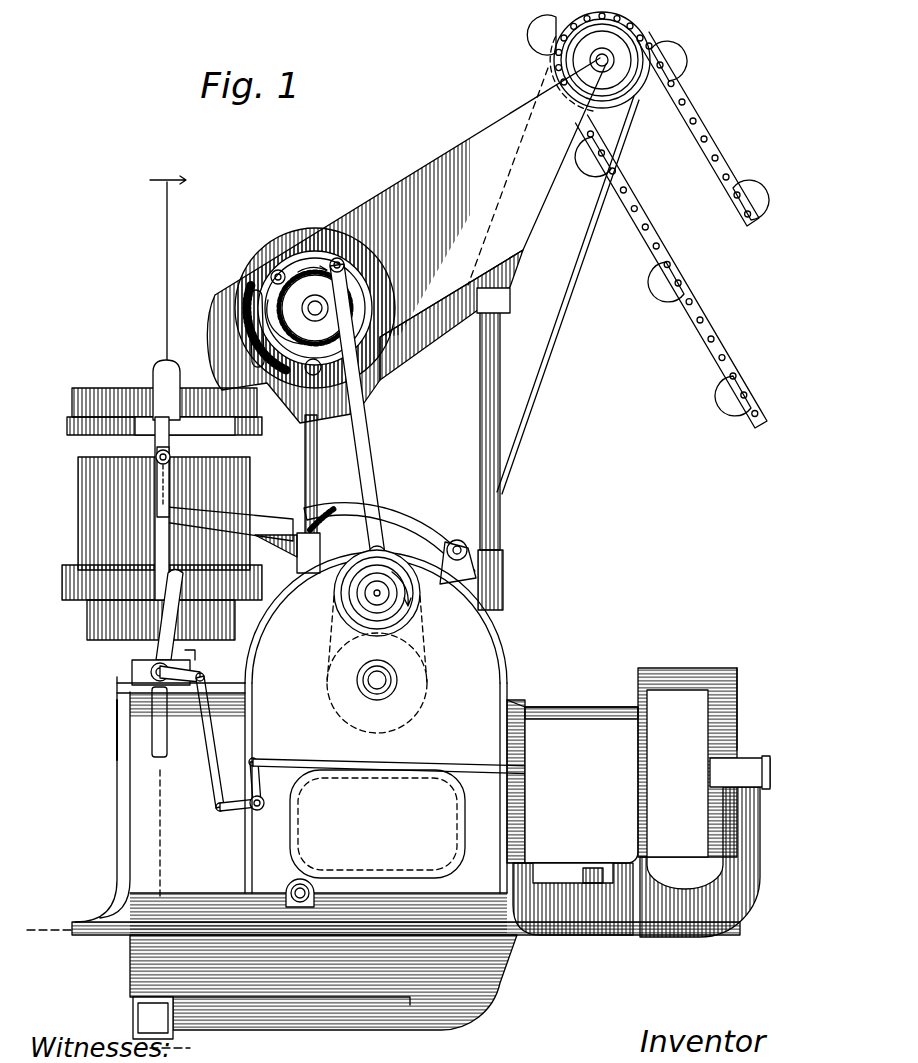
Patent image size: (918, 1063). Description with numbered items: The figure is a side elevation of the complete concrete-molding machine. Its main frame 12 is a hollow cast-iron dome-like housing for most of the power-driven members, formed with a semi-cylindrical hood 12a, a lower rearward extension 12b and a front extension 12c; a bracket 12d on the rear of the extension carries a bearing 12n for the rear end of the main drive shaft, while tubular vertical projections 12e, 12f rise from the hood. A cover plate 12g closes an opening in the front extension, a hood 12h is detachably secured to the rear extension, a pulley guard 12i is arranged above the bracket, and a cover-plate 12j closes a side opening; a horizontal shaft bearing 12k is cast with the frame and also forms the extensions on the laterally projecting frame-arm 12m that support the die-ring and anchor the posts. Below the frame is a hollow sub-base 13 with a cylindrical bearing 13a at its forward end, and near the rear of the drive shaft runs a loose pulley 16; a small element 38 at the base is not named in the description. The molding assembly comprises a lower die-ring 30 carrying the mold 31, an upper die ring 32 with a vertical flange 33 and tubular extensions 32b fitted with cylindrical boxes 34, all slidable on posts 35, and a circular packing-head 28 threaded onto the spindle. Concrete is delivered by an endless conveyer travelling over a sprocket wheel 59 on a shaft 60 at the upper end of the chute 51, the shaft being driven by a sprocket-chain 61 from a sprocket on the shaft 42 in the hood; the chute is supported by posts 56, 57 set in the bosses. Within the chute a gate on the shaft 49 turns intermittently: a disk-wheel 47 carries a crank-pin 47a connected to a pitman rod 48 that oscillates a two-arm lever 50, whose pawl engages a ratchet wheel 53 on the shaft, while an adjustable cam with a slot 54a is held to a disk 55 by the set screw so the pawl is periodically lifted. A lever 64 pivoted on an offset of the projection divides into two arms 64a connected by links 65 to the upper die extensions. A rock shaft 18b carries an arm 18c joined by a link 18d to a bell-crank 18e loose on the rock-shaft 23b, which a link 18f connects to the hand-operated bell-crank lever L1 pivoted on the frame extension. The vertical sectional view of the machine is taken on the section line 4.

The section line 4 is at (119, 608).
The main frame 12 is at (520, 935).
The semi-cylindrical hood portion 12a is at (503, 660).
The lower rearward extension 12b is at (607, 935).
The front extension 12c is at (118, 862).
The bracket 12d is at (728, 905).
The tubular vertical projection 12e is at (504, 578).
The tubular vertical projection 12f is at (262, 620).
The cover plate 12g is at (117, 742).
The cover plate or hood 12h is at (578, 712).
The pulley guard 12i is at (738, 705).
The cover-plate 12j is at (377, 824).
The frame bracket member 12k is at (150, 632).
The frame-arm 12m is at (165, 755).
The bearing 12n is at (748, 764).
The sub-base member 13 is at (320, 983).
The cylindrical bearing 13a is at (133, 1005).
The loose running pulley 16 is at (687, 762).
The rock shaft 18b is at (606, 816).
The arm 18c is at (608, 795).
The link 18d is at (470, 776).
The bell-crank 18e is at (240, 808).
The link 18f is at (214, 790).
The rock-shaft 23b is at (262, 800).
The packing-head 28 is at (88, 632).
The lower die-ring 30 is at (62, 590).
The mold 31 is at (78, 527).
The upper die ring 32 is at (72, 434).
The tubular extension 32b is at (172, 456).
The vertical flange 33 is at (72, 408).
The cylindrical box 34 is at (155, 378).
The post 35 is at (155, 548).
The bearing 38 is at (288, 893).
The shaft 42 is at (379, 690).
The disk-wheel 47 is at (412, 606).
The crank-pin 47a is at (416, 578).
The pitman rod 48 is at (366, 480).
The shaft 49 is at (317, 307).
The two-arm lever 50 is at (300, 258).
The chute 51 is at (406, 240).
The ratchet wheel 53 is at (290, 300).
The slot 54a is at (262, 337).
The disk 55 is at (321, 372).
The post 56 is at (500, 378).
The post 57 is at (305, 466).
The sprocket wheel 59 is at (622, 88).
The shaft 60 is at (604, 58).
The sprocket-chain 61 is at (576, 276).
The lever 64 is at (418, 518).
The lever arm 64a is at (292, 526).
The link 65 is at (157, 500).
The bell-crank hand-operated lever L1 is at (190, 656).